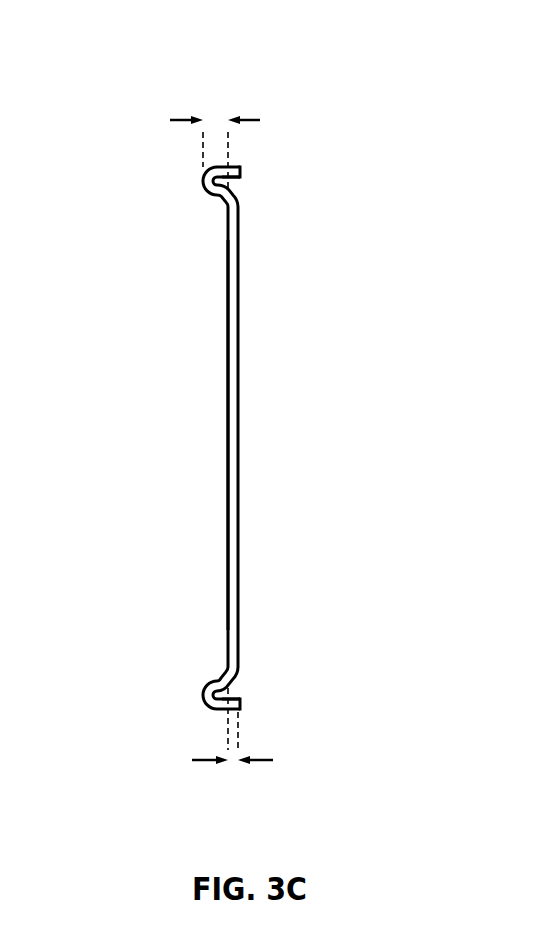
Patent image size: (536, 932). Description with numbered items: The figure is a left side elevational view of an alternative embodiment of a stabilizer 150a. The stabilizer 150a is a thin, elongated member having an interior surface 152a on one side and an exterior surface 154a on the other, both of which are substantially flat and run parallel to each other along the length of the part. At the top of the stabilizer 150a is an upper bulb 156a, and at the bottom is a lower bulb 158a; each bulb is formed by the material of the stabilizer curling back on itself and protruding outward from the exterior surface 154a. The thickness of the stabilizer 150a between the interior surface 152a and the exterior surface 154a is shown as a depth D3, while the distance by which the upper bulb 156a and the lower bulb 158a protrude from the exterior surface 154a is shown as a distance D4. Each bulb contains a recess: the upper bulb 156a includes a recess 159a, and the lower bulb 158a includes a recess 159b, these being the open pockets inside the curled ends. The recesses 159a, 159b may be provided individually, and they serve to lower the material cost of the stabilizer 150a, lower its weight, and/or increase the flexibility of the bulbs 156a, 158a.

The stabilizer 150a is at (244, 368).
The interior surface 152a is at (240, 470).
The exterior surface 154a is at (227, 393).
The upper bulb 156a is at (203, 183).
The lower bulb 158a is at (203, 692).
The recess 159a is at (252, 190).
The recess 159b is at (254, 692).
The depth D3 is at (262, 760).
The distance D4 is at (259, 120).